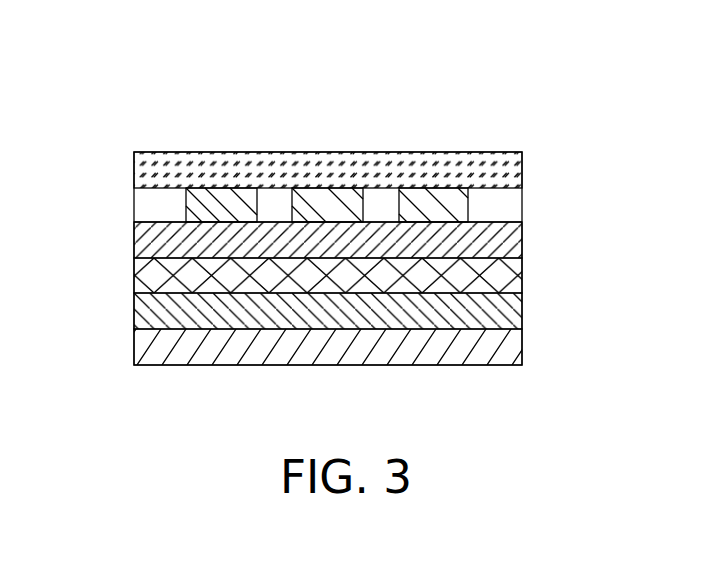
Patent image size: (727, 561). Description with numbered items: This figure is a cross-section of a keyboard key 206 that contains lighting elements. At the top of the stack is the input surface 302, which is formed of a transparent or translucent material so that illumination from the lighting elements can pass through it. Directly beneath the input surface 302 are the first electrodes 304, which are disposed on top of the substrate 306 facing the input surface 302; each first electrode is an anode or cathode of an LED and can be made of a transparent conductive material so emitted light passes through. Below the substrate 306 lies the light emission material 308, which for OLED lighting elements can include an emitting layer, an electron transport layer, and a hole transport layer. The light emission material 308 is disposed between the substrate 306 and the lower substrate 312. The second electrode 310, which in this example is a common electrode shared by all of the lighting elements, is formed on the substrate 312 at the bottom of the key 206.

The key 206 is at (145, 80).
The input surface 302 is at (522, 168).
The first electrodes 304 is at (436, 188).
The substrate 306 is at (522, 240).
The light emission material 308 is at (522, 275).
The second electrode 310 is at (522, 310).
The substrate 312 is at (522, 345).